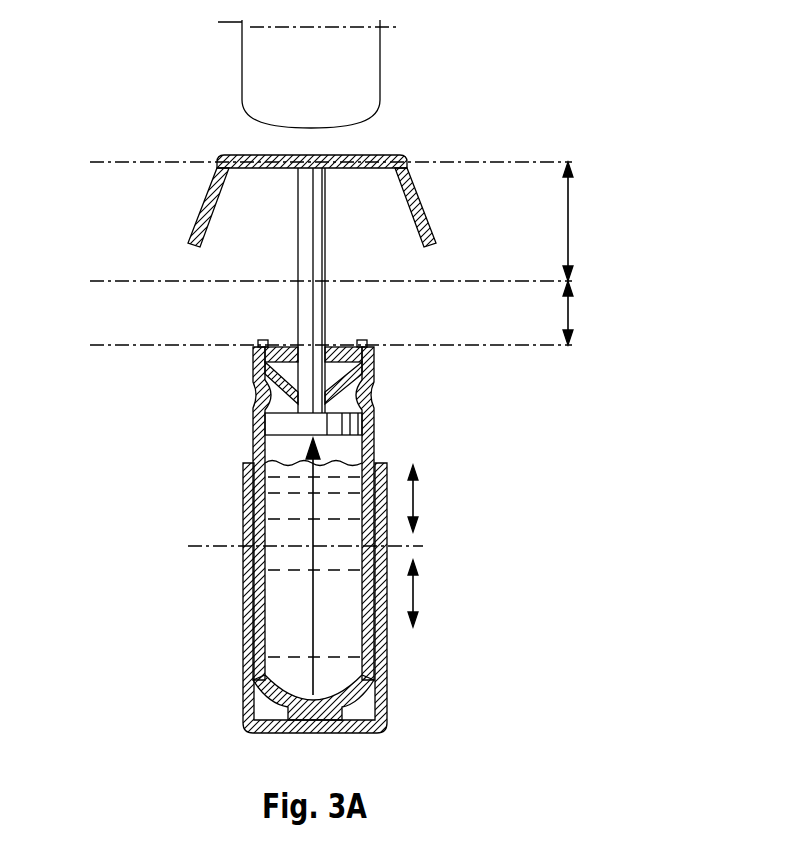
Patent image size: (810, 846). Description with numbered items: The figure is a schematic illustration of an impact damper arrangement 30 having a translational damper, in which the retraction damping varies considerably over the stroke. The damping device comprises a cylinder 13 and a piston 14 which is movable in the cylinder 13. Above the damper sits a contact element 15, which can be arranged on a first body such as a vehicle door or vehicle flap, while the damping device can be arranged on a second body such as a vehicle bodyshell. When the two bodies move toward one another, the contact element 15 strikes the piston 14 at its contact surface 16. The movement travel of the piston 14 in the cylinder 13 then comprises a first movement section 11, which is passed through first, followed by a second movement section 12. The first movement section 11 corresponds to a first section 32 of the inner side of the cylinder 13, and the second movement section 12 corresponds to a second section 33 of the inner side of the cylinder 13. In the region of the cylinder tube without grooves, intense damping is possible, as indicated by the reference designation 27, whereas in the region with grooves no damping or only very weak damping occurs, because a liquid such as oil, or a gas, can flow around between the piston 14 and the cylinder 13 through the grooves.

The impact damper arrangement 30 is at (52, 50).
The contact element 15 is at (345, 68).
The contact surface 16 is at (378, 157).
The first movement section 11 is at (568, 222).
The second movement section 12 is at (568, 312).
The cylinder 13 is at (377, 427).
The piston 14 is at (282, 427).
The intense damping region 27 is at (317, 678).
The first section of the inner side of the cylinder 32 is at (413, 500).
The second section of the inner side of the cylinder 33 is at (413, 595).